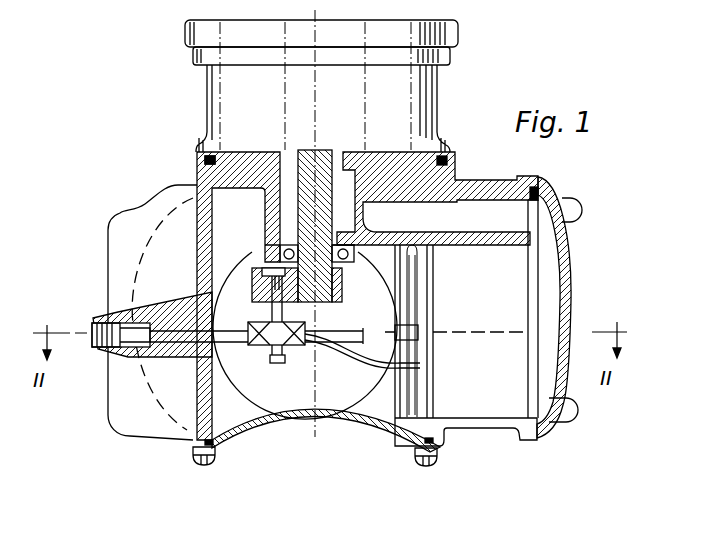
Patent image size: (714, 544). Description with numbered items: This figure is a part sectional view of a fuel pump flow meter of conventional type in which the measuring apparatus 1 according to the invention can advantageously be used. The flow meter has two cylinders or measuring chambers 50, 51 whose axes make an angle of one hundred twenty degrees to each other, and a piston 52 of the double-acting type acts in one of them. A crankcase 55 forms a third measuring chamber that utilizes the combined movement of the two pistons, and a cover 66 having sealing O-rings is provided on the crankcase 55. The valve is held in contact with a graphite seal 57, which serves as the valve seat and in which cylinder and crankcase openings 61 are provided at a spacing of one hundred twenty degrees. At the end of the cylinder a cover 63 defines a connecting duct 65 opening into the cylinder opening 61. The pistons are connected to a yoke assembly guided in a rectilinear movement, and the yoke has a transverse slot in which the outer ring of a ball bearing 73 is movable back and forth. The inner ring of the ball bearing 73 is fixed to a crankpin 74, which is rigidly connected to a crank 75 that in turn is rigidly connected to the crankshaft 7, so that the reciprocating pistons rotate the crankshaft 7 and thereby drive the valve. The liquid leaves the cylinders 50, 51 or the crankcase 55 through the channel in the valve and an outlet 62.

The measuring apparatus 1 is at (442, 94).
The crankshaft 7 is at (350, 193).
The measuring chamber 50 is at (476, 428).
The measuring chamber 51 is at (262, 403).
The piston 52 is at (436, 289).
The crankcase 55 is at (340, 395).
The graphite seal 57 is at (205, 161).
The cylinder and crankcase openings 61 is at (490, 207).
The outlet 62 is at (278, 217).
The cover 63 is at (566, 266).
The connecting duct 65 is at (548, 200).
The cover 66 is at (362, 420).
The ball bearing 73 is at (252, 348).
The crankpin 74 is at (280, 363).
The crank 75 is at (343, 284).